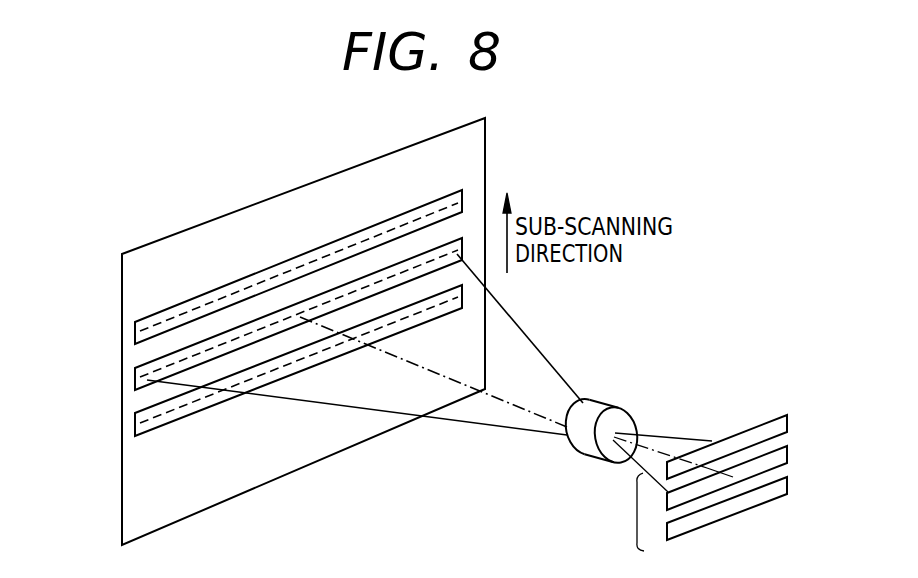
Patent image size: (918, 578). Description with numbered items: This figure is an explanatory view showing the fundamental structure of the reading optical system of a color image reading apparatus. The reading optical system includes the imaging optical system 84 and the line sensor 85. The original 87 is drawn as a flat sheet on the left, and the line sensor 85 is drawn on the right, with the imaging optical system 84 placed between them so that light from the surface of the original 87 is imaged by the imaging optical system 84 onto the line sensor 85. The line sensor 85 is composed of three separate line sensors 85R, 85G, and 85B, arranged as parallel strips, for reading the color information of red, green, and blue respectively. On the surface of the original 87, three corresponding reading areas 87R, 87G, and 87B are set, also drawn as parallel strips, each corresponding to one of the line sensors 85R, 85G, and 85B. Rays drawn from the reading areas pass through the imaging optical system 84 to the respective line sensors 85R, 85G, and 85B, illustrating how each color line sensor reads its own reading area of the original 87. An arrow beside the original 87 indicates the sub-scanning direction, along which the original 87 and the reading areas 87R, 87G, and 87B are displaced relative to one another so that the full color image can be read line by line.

The imaging optical system 84 is at (618, 402).
The line sensor 85 is at (738, 475).
The line sensor for R 85R is at (788, 419).
The line sensor for G 85G is at (788, 453).
The line sensor for B 85B is at (788, 487).
The original 87 is at (137, 496).
The reading area for B 87B is at (135, 338).
The reading area for G 87G is at (135, 390).
The reading area for R 87R is at (135, 433).